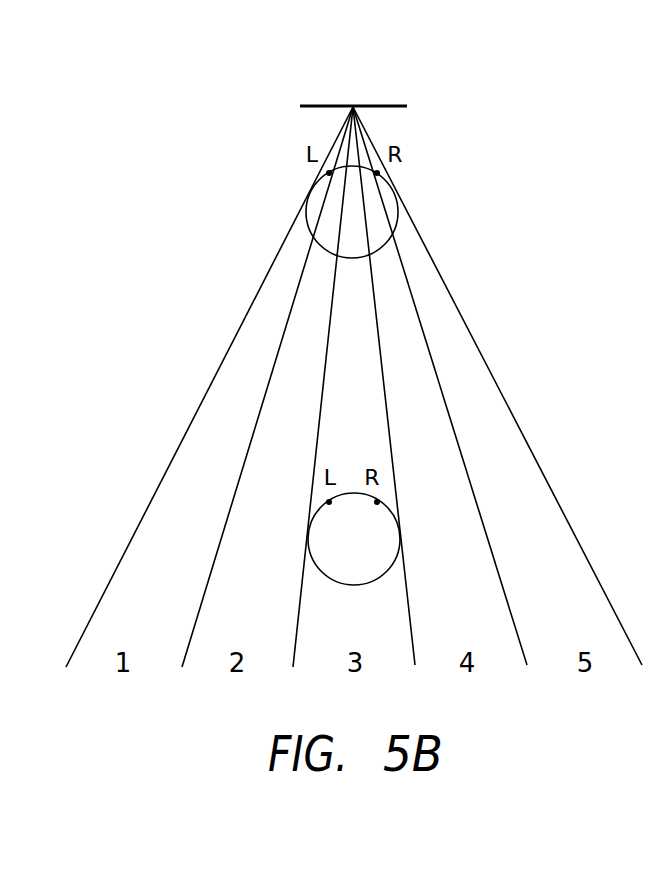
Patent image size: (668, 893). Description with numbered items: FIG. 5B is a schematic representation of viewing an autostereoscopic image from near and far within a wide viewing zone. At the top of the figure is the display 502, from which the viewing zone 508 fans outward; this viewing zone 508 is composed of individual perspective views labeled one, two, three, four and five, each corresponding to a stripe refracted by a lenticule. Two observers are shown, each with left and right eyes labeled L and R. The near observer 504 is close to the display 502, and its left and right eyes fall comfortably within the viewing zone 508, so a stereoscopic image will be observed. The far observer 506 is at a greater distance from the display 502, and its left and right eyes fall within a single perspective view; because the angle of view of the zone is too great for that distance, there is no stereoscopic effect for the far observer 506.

The display 502 is at (380, 105).
The near observer 504 is at (397, 192).
The far observer 506 is at (400, 538).
The viewing zone 508 is at (498, 383).